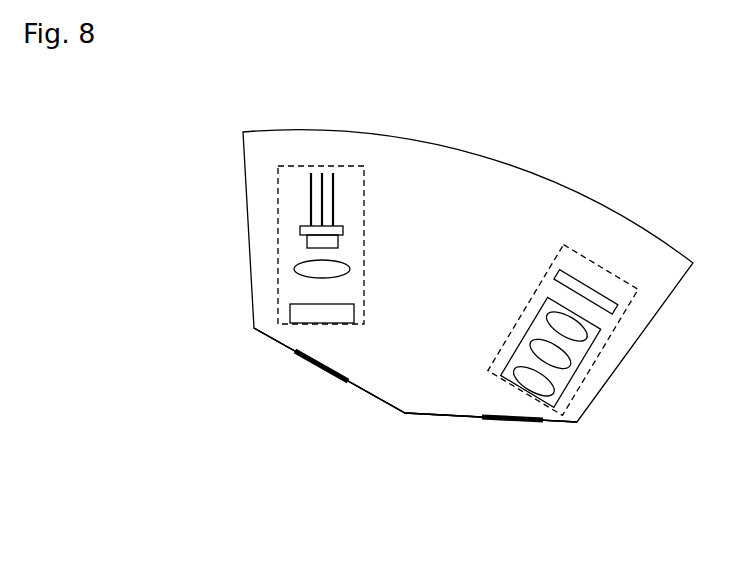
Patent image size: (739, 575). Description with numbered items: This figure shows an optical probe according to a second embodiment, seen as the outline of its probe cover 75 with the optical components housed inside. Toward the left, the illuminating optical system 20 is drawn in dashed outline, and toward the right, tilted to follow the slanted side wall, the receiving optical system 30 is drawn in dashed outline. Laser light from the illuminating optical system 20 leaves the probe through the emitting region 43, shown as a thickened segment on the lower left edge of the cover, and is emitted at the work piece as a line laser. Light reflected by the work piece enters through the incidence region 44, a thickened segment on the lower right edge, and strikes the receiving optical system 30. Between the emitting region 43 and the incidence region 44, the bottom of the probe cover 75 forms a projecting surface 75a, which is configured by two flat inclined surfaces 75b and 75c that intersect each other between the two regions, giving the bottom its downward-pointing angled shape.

The probe cover 75 is at (546, 170).
The illuminating optical system 20 is at (322, 166).
The receiving optical system 30 is at (605, 268).
The emitting region 43 is at (319, 369).
The incidence region 44 is at (510, 424).
The projecting surface 75a is at (333, 483).
The inclined surface 75b is at (372, 395).
The inclined surface 75c is at (443, 415).